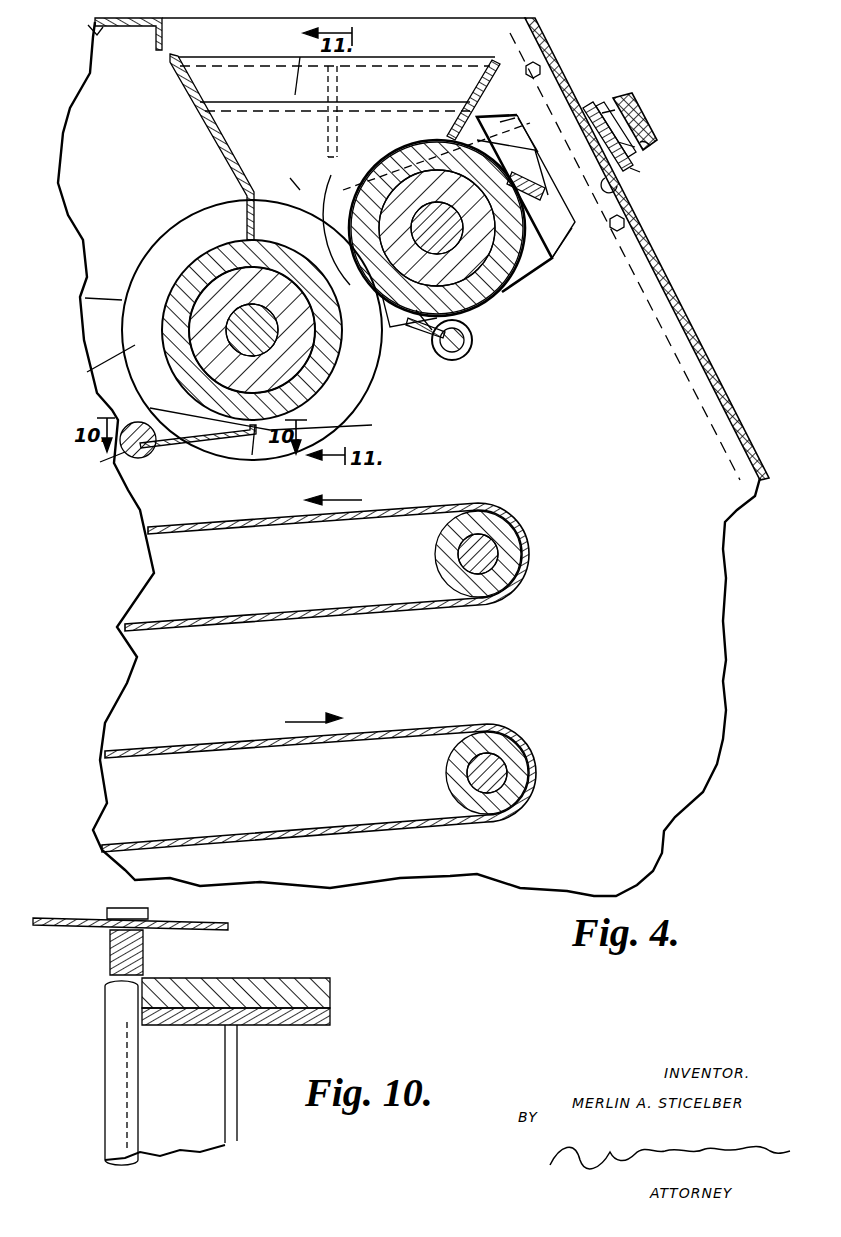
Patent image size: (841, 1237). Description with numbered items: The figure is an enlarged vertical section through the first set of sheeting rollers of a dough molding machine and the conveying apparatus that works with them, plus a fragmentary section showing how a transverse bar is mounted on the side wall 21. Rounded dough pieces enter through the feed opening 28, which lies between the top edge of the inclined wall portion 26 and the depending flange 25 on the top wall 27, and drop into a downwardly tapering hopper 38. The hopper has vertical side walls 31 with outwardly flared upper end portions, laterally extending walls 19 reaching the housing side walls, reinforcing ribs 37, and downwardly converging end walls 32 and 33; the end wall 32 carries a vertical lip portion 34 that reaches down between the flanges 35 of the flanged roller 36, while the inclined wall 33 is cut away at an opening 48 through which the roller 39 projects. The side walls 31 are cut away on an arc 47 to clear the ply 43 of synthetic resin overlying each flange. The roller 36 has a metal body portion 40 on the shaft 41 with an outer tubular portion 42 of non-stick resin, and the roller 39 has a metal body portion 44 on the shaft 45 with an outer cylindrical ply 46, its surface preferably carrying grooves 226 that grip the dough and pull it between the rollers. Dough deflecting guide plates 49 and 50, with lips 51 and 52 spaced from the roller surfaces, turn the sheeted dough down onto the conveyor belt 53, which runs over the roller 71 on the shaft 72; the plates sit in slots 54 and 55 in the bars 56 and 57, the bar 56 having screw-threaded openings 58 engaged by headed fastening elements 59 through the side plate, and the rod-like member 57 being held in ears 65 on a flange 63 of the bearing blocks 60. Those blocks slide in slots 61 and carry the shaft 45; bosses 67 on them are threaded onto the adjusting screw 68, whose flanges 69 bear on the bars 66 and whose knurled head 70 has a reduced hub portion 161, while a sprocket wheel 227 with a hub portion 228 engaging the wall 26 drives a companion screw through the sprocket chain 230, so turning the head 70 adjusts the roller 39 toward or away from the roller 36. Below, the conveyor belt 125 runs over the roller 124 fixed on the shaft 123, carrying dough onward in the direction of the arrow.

In FIG. 4, the laterally extending walls 19 is at (230, 60).
In FIG. 4, the side wall 21 is at (690, 550).
In FIG. 10, the side wall 21 is at (195, 920).
In FIG. 4, the depending flange 25 is at (156, 36).
In FIG. 4, the inclined wall portion 26 is at (730, 302).
In FIG. 4, the top wall 27 is at (88, 30).
In FIG. 4, the feed opening 28 is at (455, 60).
In FIG. 4, the hopper side walls 31 is at (240, 150).
In FIG. 4, the hopper end wall 32 is at (213, 130).
In FIG. 4, the inclined hopper end wall 33 is at (484, 108).
In FIG. 4, the vertical lip portion 34 is at (245, 230).
In FIG. 4, the flanges 35 is at (87, 298).
In FIG. 10, the flanges 35 is at (300, 975).
In FIG. 4, the flanged roller 36 is at (365, 380).
In FIG. 4, the reinforcing ribs 37 is at (325, 125).
In FIG. 4, the downwardly tapering hopper 38 is at (296, 64).
In FIG. 4, the roller 39 is at (500, 298).
In FIG. 4, the metal body portion 40 is at (200, 352).
In FIG. 4, the shaft 41 is at (240, 340).
In FIG. 4, the outer tubular portion 42 is at (273, 419).
In FIG. 4, the ply 43 is at (97, 363).
In FIG. 10, the ply 43 is at (318, 1025).
In FIG. 4, the metal body portion 44 is at (535, 238).
In FIG. 4, the shaft 45 is at (445, 225).
In FIG. 4, the outer cylindrical ply 46 is at (395, 168).
In FIG. 4, the arc 47 is at (289, 181).
In FIG. 4, the opening 48 is at (445, 140).
In FIG. 4, the dough deflecting guide plate 49 is at (192, 450).
In FIG. 10, the dough deflecting guide plate 49 is at (185, 1143).
In FIG. 4, the dough deflecting guide plate 50 is at (430, 335).
In FIG. 4, the lip 51 is at (258, 462).
In FIG. 10, the lip 51 is at (238, 1110).
In FIG. 4, the lip 52 is at (395, 330).
In FIG. 4, the conveyor belt 53 is at (450, 480).
In FIG. 4, the slot 54 is at (155, 455).
In FIG. 4, the slot 55 is at (465, 342).
In FIG. 4, the bar 56 is at (97, 464).
In FIG. 10, the bar 56 is at (105, 1070).
In FIG. 4, the rod-like member 57 is at (470, 350).
In FIG. 10, the screw-threaded openings 58 is at (145, 945).
In FIG. 10, the screw-threaded headed fastening elements 59 is at (115, 908).
In FIG. 4, the adjustable bearing blocks 60 is at (535, 128).
In FIG. 4, the slots 61 is at (505, 125).
In FIG. 4, the flanges 63 is at (478, 128).
In FIG. 4, the ears 65 is at (470, 330).
In FIG. 4, the bars 66 is at (660, 267).
In FIG. 4, the bosses 67 is at (562, 222).
In FIG. 4, the adjusting screw 68 is at (548, 188).
In FIG. 4, the flanges 69 is at (588, 104).
In FIG. 4, the knurled head 70 is at (650, 120).
In FIG. 4, the roller 71 is at (500, 518).
In FIG. 4, the shaft 72 is at (490, 545).
In FIG. 4, the shaft 123 is at (495, 772).
In FIG. 4, the roller 124 is at (517, 760).
In FIG. 4, the conveyor belt 125 is at (382, 770).
In FIG. 4, the reduced hub portion 161 is at (661, 151).
In FIG. 4, the grooves 226 is at (365, 180).
In FIG. 4, the sprocket wheel 227 is at (600, 108).
In FIG. 4, the hub portion 228 is at (620, 183).
In FIG. 4, the sprocket chain 230 is at (648, 171).